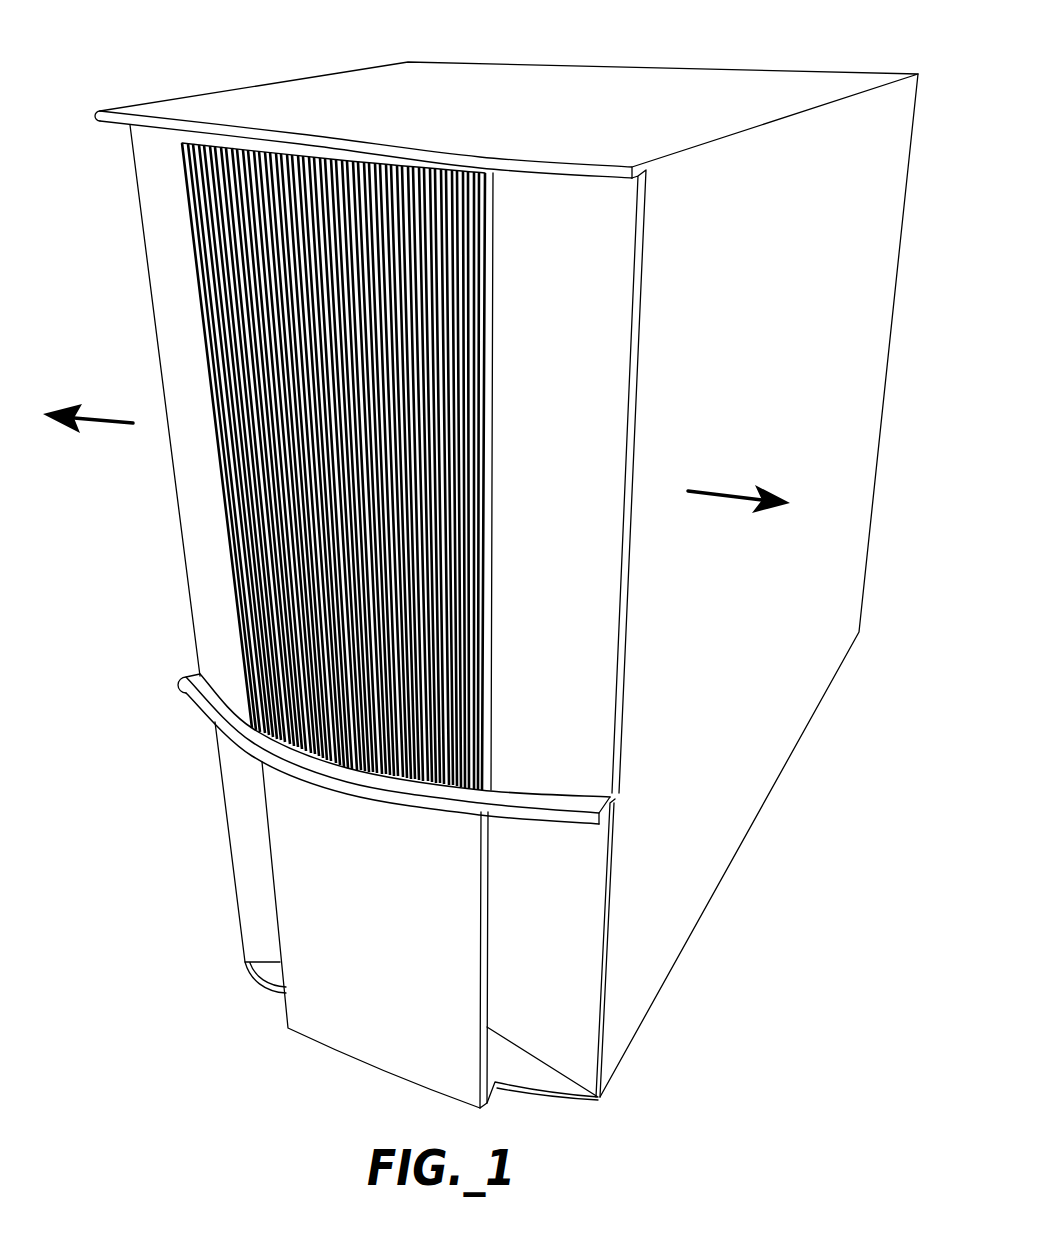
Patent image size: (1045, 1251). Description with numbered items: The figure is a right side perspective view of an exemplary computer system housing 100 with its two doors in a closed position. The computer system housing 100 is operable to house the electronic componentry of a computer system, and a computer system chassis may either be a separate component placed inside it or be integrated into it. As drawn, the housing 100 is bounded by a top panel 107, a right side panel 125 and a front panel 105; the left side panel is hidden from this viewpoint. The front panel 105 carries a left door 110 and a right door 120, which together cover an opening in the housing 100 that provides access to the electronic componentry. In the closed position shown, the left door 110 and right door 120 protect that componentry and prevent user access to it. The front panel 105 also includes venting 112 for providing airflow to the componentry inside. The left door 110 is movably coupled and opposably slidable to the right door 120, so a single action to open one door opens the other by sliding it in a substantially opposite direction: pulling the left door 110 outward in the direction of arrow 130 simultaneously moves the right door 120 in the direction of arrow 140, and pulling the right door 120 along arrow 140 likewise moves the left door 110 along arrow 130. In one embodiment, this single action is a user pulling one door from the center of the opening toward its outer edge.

The computer system housing 100 is at (308, 68).
The front panel 105 is at (567, 993).
The top panel 107 is at (686, 80).
The left door 110 is at (202, 573).
The venting 112 is at (278, 972).
The right door 120 is at (595, 683).
The right side panel 125 is at (812, 670).
The arrow 130 is at (108, 420).
The arrow 140 is at (723, 493).